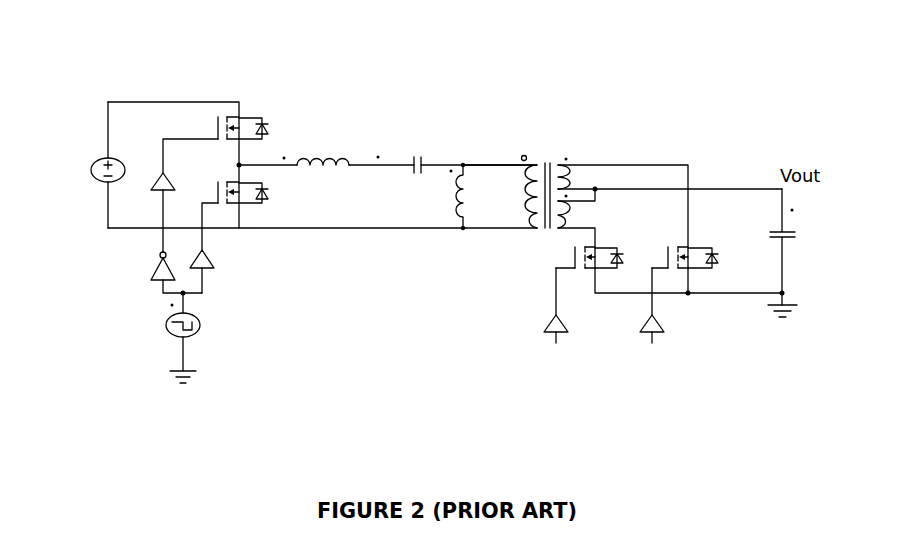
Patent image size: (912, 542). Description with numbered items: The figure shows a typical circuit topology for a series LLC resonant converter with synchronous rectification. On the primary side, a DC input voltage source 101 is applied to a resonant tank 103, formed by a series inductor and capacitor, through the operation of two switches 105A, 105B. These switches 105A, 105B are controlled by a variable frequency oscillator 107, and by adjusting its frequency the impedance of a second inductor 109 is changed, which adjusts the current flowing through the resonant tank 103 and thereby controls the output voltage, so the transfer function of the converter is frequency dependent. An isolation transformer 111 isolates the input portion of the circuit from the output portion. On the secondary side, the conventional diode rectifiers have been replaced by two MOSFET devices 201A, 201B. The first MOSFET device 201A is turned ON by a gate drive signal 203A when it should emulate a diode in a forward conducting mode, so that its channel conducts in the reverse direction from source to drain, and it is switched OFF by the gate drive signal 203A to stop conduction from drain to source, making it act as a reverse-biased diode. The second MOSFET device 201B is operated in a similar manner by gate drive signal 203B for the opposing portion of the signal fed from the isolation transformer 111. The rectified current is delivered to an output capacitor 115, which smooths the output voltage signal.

The DC input voltage source 101 is at (72, 121).
The resonant tank 103 is at (435, 147).
The switch 105A is at (285, 77).
The switch 105B is at (289, 244).
The variable frequency oscillator 107 is at (123, 367).
The second inductor 109 is at (481, 229).
The isolation transformer 111 is at (547, 147).
The output capacitor 115 is at (809, 269).
The first MOSFET device 201A is at (716, 319).
The second MOSFET device 201B is at (594, 321).
The gate drive signal 203A is at (651, 318).
The gate drive signal 203B is at (554, 318).